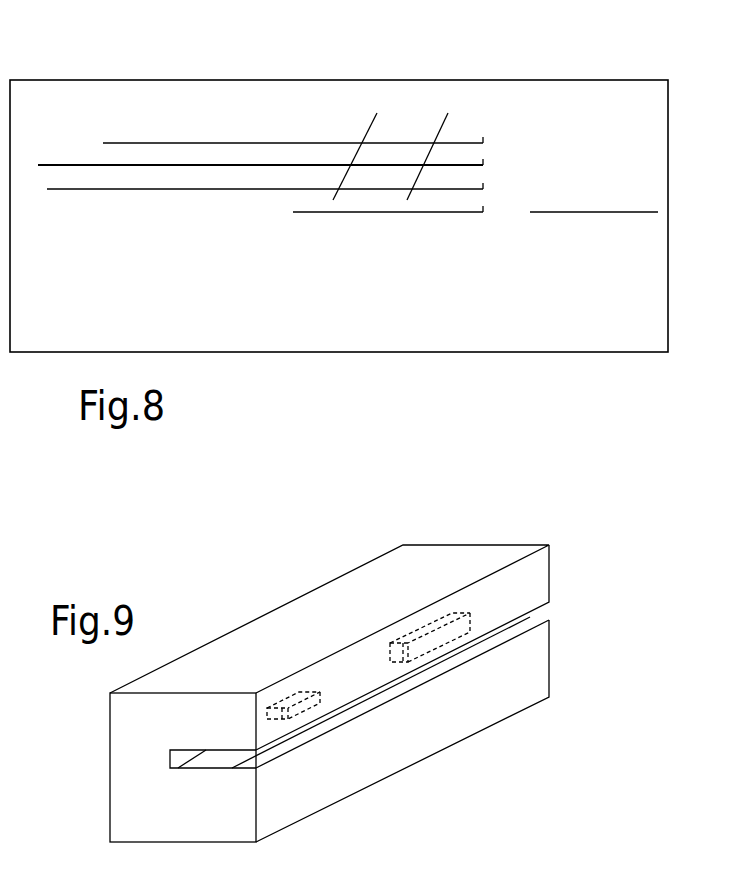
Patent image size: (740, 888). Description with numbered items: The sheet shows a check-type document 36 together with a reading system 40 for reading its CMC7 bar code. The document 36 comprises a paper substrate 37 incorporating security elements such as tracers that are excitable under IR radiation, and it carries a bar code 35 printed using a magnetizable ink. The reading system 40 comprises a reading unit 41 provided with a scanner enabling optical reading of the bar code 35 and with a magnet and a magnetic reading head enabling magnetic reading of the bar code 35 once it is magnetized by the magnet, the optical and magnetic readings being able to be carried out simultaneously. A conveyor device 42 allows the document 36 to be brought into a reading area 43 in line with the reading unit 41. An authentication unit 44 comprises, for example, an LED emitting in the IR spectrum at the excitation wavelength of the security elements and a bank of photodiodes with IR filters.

In FIG. 8, the bar code 35 is at (474, 337).
In FIG. 8, the document 36 is at (470, 73).
In FIG. 8, the paper substrate 37 is at (560, 84).
In FIG. 9, the reading system 40 is at (566, 663).
In FIG. 9, the reading unit 41 is at (426, 632).
In FIG. 9, the conveyor device 42 is at (203, 762).
In FIG. 9, the reading area 43 is at (423, 670).
In FIG. 9, the authentication unit 44 is at (300, 692).